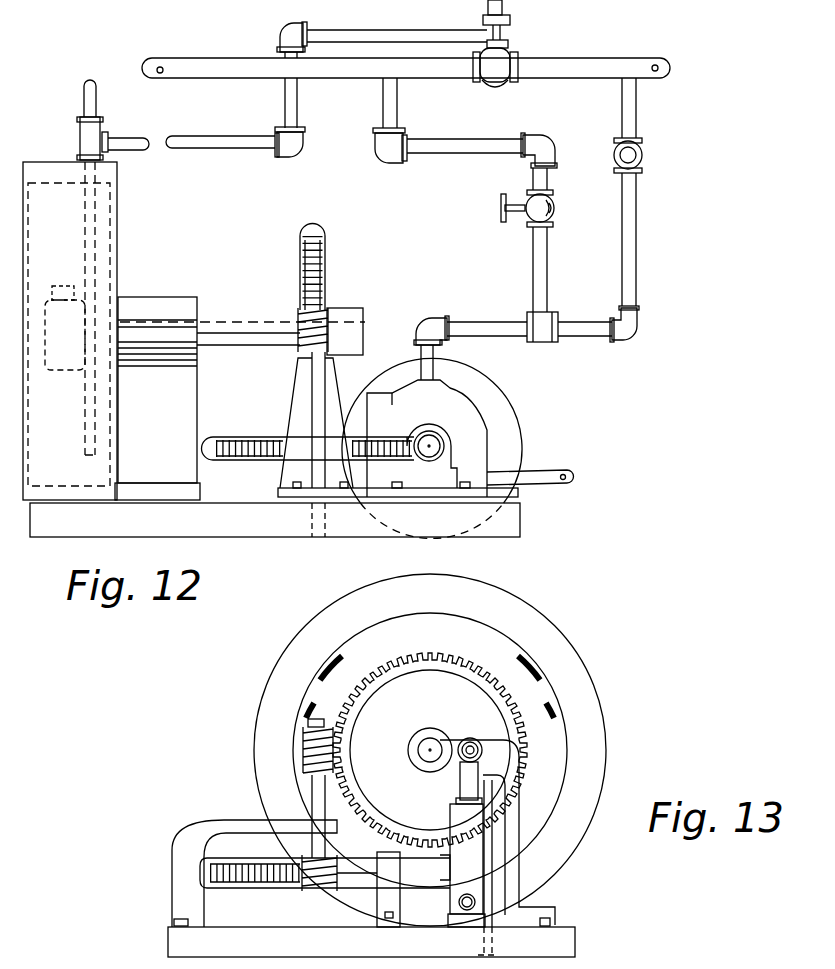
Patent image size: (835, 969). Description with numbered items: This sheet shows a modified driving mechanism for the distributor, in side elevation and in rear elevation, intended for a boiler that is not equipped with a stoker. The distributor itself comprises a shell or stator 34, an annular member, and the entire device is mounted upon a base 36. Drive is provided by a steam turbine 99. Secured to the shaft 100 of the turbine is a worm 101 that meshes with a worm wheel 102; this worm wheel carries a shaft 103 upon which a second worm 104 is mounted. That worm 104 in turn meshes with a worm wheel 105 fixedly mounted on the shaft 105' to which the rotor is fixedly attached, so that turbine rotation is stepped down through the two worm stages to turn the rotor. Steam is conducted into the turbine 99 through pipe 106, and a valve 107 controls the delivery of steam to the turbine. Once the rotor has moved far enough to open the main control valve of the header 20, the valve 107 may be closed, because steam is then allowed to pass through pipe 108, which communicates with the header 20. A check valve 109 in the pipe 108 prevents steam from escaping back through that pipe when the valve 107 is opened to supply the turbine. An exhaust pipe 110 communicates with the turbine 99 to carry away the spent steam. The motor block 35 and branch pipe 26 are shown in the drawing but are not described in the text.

In FIG. 12, the header 20 is at (603, 57).
In FIG. 12, the branch pipe 26 is at (322, 62).
In FIG. 12, the shell or stator 34 is at (96, 290).
In FIG. 13, the shell or stator 34 is at (560, 667).
In FIG. 12, the motor 35 is at (172, 298).
In FIG. 12, the base 36 is at (248, 537).
In FIG. 13, the base 36 is at (371, 942).
In FIG. 12, the steam turbine 99 is at (497, 415).
In FIG. 13, the steam turbine 99 is at (470, 855).
In FIG. 12, the shaft 100 is at (430, 452).
In FIG. 13, the shaft 100 is at (373, 885).
In FIG. 12, the worm 101 is at (451, 447).
In FIG. 13, the worm 101 is at (315, 880).
In FIG. 12, the worm wheel 102 is at (255, 437).
In FIG. 13, the worm wheel 102 is at (240, 858).
In FIG. 12, the shaft 103 is at (312, 377).
In FIG. 13, the shaft 103 is at (312, 795).
In FIG. 12, the worm 104 is at (350, 316).
In FIG. 13, the worm 104 is at (305, 743).
In FIG. 12, the worm wheel 105 is at (343, 266).
In FIG. 13, the worm wheel 105 is at (460, 719).
In FIG. 12, the shaft 105' is at (242, 308).
In FIG. 12, the pipe 106 is at (474, 328).
In FIG. 13, the pipe 106 is at (470, 745).
In FIG. 12, the valve 107 is at (555, 204).
In FIG. 12, the pipe 108 is at (640, 215).
In FIG. 12, the check valve 109 is at (650, 152).
In FIG. 12, the exhaust pipe 110 is at (568, 470).
In FIG. 13, the exhaust pipe 110 is at (478, 904).